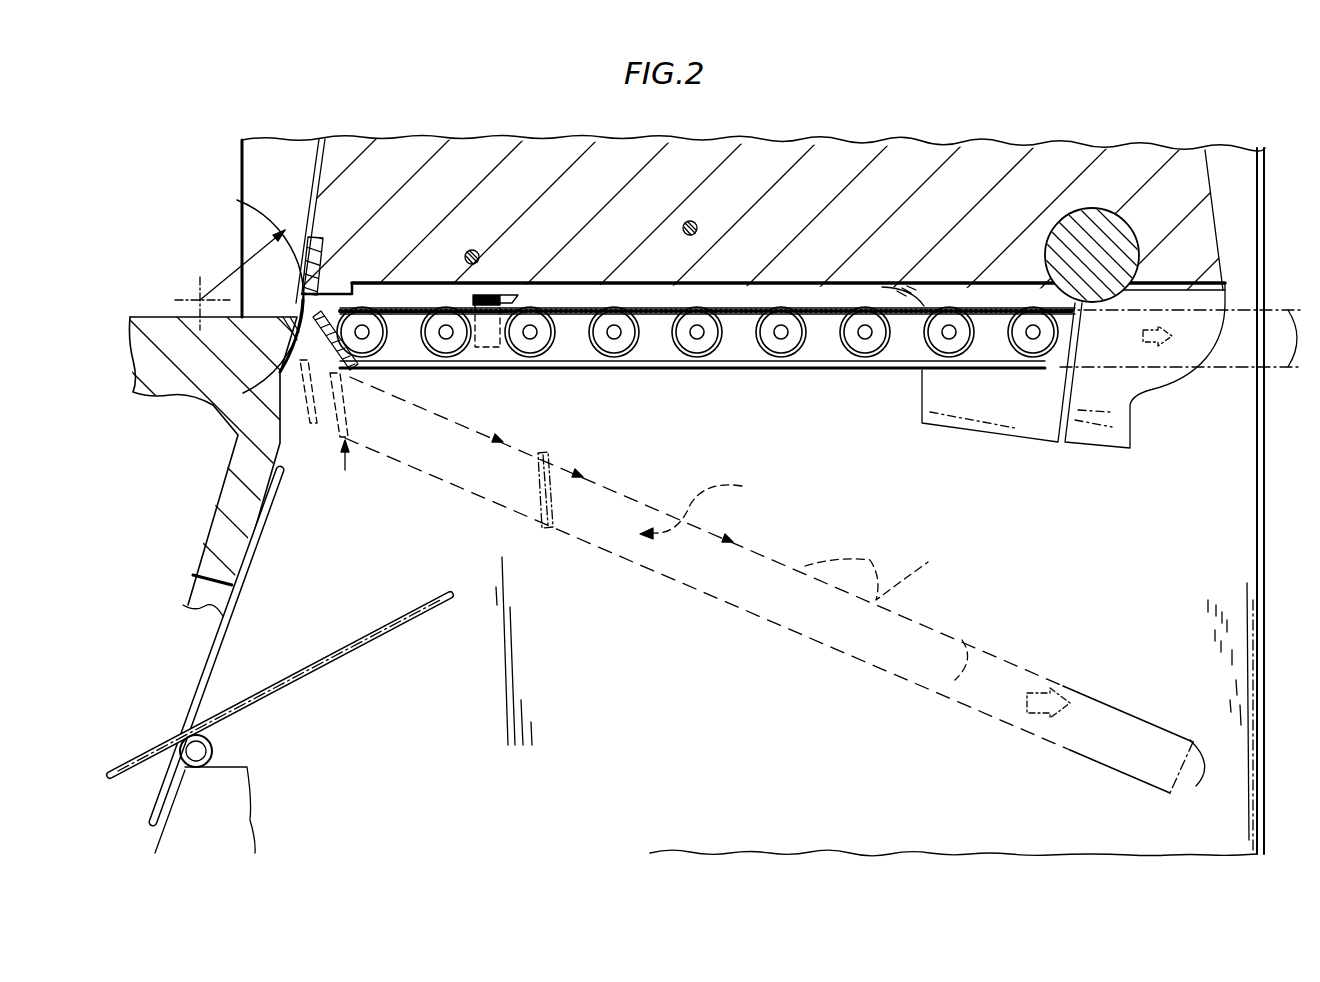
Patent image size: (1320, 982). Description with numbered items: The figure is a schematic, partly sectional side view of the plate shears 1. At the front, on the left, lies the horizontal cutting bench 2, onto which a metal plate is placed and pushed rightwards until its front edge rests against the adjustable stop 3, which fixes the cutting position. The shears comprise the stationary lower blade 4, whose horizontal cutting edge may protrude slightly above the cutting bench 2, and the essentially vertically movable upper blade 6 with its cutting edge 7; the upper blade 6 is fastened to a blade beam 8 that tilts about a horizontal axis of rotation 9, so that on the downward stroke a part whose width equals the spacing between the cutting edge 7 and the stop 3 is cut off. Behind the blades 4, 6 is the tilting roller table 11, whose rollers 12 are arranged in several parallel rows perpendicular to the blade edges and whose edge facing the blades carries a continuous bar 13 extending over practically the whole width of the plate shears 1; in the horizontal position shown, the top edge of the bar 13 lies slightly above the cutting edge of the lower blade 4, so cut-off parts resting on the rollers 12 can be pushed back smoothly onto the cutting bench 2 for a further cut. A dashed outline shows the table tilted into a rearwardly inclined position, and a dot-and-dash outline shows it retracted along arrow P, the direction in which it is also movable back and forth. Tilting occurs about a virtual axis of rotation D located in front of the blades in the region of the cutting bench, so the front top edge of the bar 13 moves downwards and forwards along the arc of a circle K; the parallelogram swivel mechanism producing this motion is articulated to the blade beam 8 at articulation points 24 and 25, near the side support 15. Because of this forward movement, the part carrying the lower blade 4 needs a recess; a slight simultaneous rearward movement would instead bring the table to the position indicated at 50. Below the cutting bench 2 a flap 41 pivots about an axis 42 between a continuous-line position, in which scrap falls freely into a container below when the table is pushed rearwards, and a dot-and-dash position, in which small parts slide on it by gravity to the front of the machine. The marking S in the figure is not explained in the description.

The plate shears 1 is at (265, 177).
The cutting bench 2 is at (143, 313).
The adjustable stop 3 is at (496, 282).
The lower blade 4 is at (279, 335).
The upper blade 6 is at (326, 243).
The cutting edge 7 is at (293, 291).
The blade beam 8 is at (1057, 153).
The axis of rotation 9 is at (1097, 220).
The tilting roller table 11 is at (732, 377).
The rollers 12 is at (932, 345).
The bar 13 is at (352, 371).
The side support 15 is at (1242, 258).
The articulation point 24 is at (476, 250).
The articulation point 25 is at (696, 224).
The flap 41 is at (233, 622).
The axis 42 is at (212, 748).
The position of the tilting roller table 50 is at (347, 472).
The arc of a circle K is at (252, 203).
The axis of rotation D is at (198, 298).
The gap S is at (293, 307).
The arrow P is at (1046, 690).